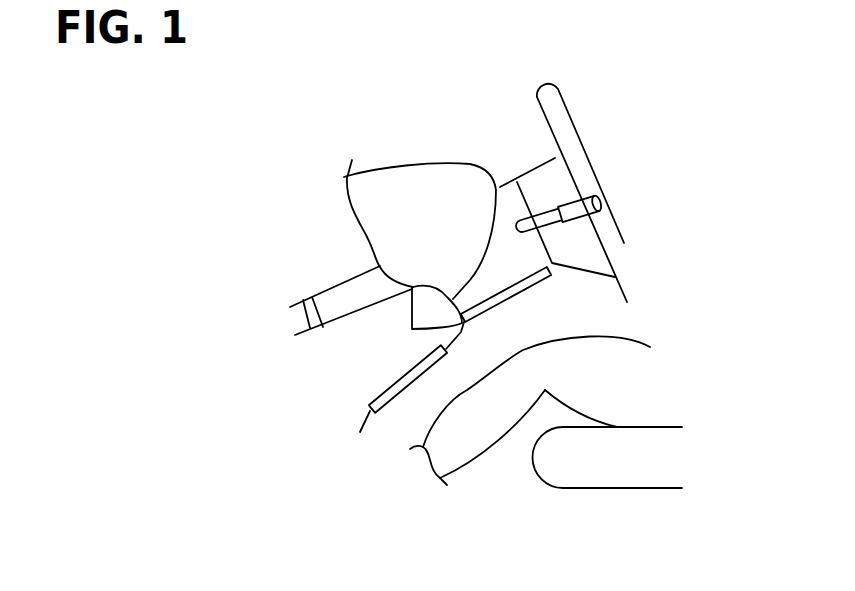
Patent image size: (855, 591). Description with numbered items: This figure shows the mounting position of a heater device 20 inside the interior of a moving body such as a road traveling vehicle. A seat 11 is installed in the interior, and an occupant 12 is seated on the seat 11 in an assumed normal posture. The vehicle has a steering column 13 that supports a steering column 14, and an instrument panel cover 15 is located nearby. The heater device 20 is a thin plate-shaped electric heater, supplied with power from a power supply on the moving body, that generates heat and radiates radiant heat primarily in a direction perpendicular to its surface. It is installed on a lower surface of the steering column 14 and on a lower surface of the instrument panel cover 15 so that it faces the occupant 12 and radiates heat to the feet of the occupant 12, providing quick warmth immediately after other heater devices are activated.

The seat 11 is at (645, 489).
The occupant 12 is at (487, 449).
The steering column 13 is at (568, 113).
The steering column 14 is at (506, 186).
The instrument panel cover 15 is at (467, 336).
The heater device 20 is at (533, 285).